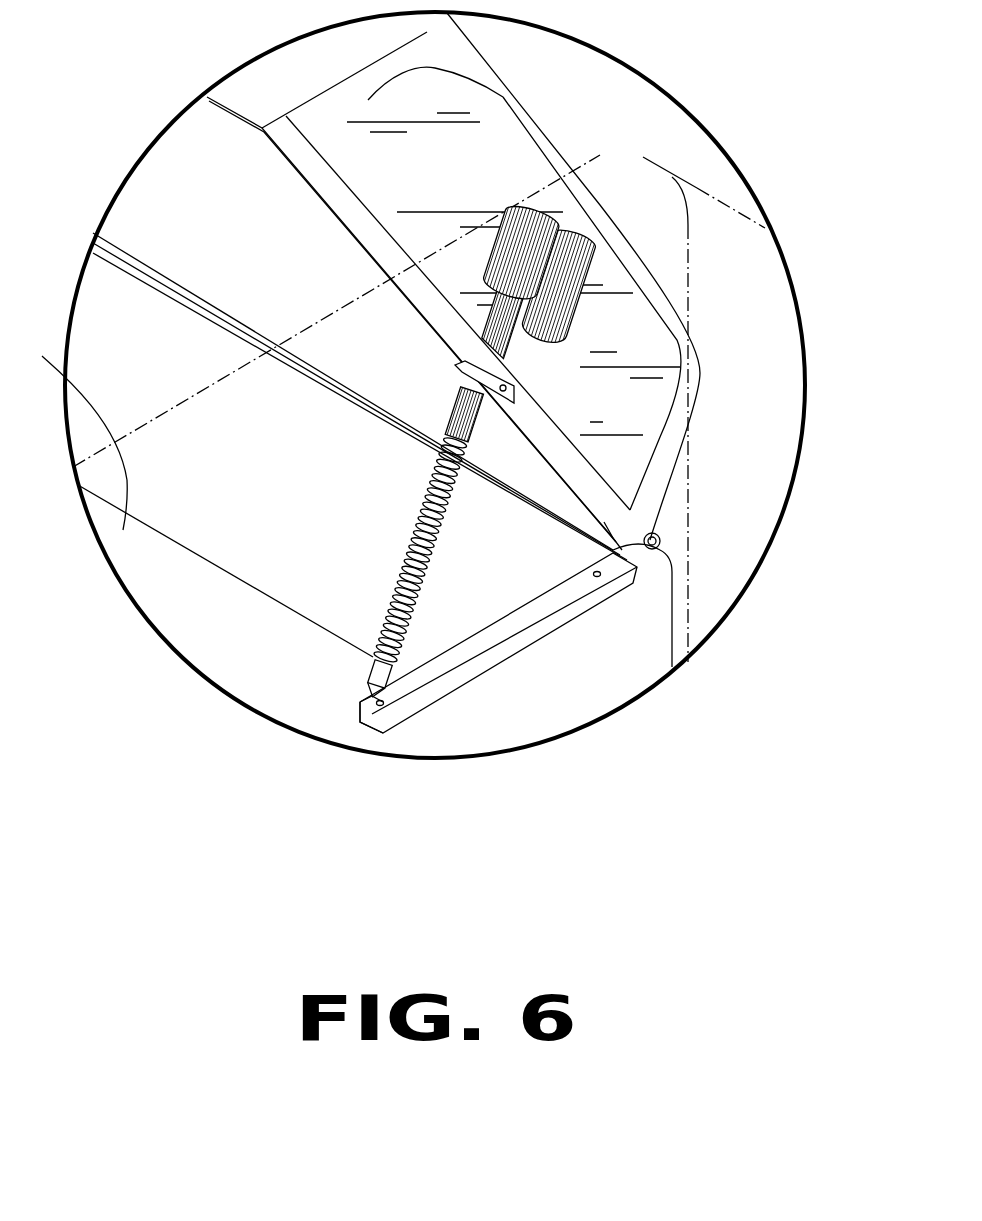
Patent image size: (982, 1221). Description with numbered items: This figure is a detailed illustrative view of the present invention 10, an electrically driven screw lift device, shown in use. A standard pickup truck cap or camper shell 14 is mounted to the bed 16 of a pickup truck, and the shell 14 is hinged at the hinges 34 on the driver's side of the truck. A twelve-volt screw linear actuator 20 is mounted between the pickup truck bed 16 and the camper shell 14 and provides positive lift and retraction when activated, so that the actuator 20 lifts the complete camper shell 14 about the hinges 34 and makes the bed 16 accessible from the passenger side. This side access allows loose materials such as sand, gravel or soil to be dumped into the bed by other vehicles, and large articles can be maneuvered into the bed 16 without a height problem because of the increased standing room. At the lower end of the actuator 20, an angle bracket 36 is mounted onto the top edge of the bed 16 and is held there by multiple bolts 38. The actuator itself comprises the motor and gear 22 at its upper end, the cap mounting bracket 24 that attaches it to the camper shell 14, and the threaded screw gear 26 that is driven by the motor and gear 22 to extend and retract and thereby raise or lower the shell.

The electrically driven screw lift device 10 is at (360, 603).
The camper shell 14 is at (507, 97).
The pickup truck bed 16 is at (42, 356).
The screw linear actuator 20 is at (530, 367).
The motor and gear 22 is at (537, 233).
The cap mounting bracket 24 is at (470, 392).
The screw gear 26 is at (400, 600).
The hinges 34 is at (664, 543).
The angle bracket 36 is at (498, 630).
The bolts 38 is at (597, 578).